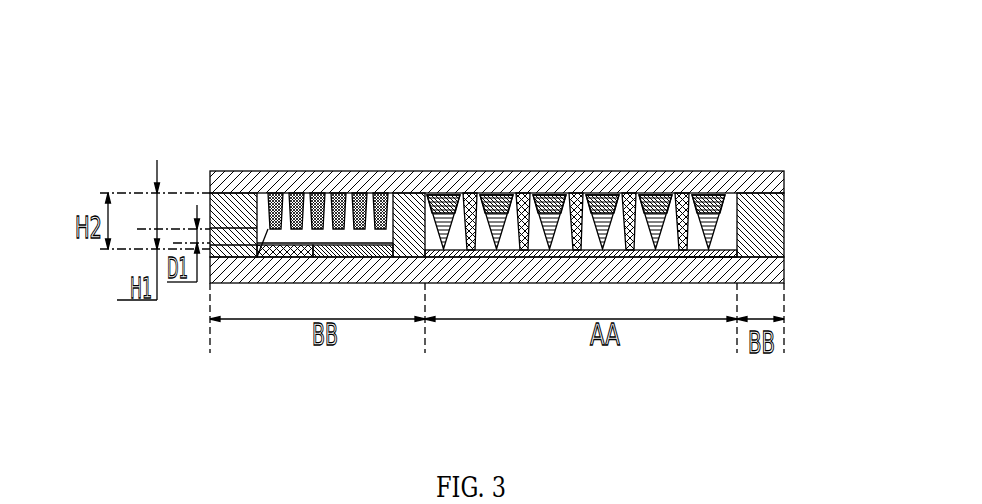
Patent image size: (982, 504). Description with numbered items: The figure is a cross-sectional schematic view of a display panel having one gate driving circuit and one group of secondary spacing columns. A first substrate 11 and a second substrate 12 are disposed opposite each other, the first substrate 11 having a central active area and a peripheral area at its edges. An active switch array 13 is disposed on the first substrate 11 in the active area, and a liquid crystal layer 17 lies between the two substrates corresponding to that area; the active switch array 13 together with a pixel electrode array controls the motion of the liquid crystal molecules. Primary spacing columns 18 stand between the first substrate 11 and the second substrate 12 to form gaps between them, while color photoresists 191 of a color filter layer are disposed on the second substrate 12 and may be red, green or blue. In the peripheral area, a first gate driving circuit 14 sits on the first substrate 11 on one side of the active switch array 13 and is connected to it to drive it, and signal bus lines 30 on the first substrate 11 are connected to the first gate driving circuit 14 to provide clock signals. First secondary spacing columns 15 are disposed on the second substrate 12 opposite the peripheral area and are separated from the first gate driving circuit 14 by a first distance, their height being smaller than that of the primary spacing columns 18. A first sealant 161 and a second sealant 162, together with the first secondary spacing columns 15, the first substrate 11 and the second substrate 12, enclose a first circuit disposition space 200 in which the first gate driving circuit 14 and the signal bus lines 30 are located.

The first substrate 11 is at (770, 268).
The second substrate 12 is at (770, 181).
The active switch array 13 is at (690, 258).
The first gate driving circuit 14 is at (353, 260).
The first secondary spacing columns 15 is at (359, 192).
The liquid crystal layer 17 is at (474, 258).
The primary spacing columns 18 is at (470, 195).
The signal bus lines 30 is at (275, 260).
The first sealant 161 is at (228, 192).
The second sealant 162 is at (397, 192).
The color photoresists 191 is at (543, 195).
The first circuit disposition space 200 is at (250, 260).